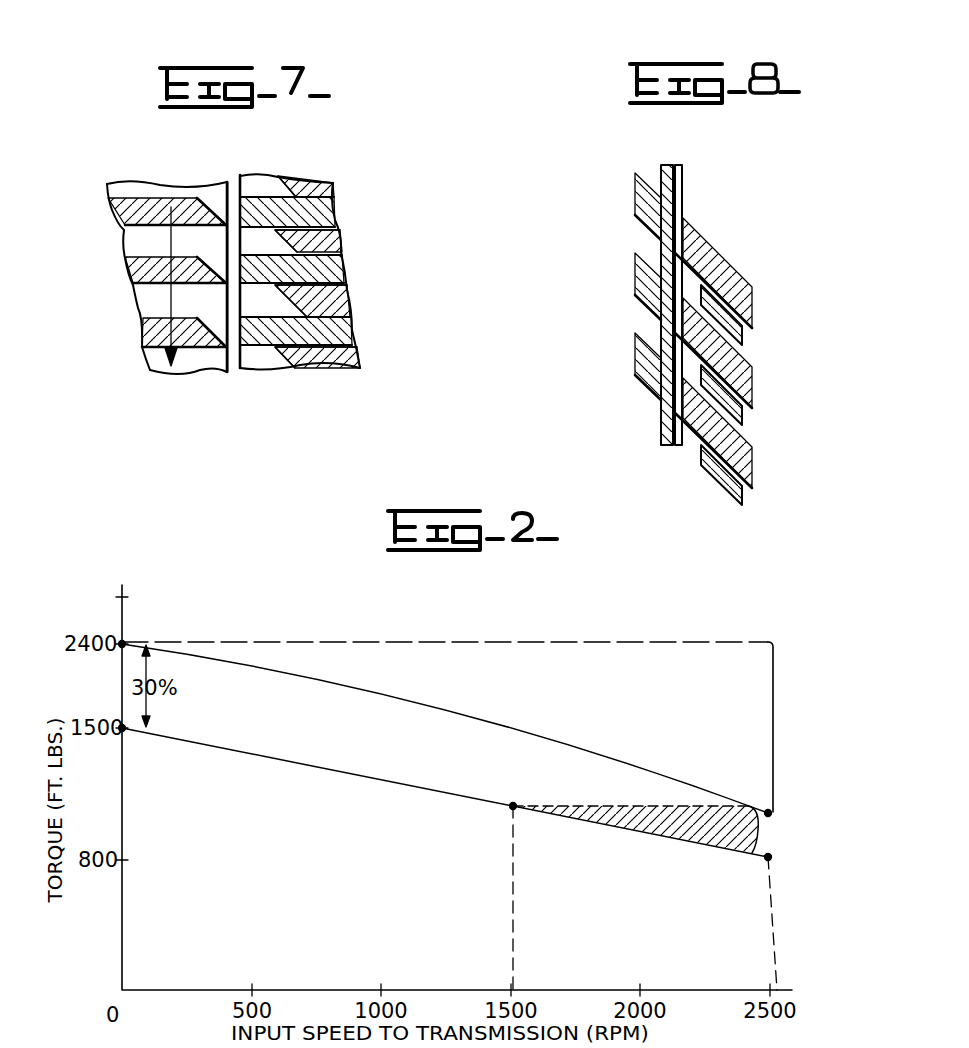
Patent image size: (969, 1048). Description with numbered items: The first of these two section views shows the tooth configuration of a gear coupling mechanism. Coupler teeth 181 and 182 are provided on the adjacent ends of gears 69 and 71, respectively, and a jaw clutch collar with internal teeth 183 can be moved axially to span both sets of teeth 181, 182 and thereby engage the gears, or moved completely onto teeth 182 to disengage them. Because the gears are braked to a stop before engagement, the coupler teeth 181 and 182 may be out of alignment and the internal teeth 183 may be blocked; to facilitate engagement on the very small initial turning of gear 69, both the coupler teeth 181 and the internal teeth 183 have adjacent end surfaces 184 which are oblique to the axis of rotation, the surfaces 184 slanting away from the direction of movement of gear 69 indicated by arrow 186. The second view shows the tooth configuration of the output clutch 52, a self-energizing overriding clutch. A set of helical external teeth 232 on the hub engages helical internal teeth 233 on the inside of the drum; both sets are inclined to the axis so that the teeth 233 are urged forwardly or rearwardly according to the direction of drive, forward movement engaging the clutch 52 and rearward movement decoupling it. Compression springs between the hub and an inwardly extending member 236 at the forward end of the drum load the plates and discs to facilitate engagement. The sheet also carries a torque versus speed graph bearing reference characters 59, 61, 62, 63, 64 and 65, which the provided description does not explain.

In FIG. 7, the gear 69 is at (108, 180).
In FIG. 7, the gear 71 is at (342, 210).
In FIG. 7, the coupler teeth 181 is at (152, 198).
In FIG. 7, the coupler teeth 182 is at (338, 265).
In FIG. 7, the internal teeth 183 is at (347, 298).
In FIG. 7, the end surfaces 184 is at (277, 242).
In FIG. 7, the arrow 186 is at (152, 239).
In FIG. 8, the output clutch 52 is at (630, 233).
In FIG. 8, the external teeth 232 is at (743, 332).
In FIG. 8, the internal teeth 233 is at (753, 303).
In FIG. 8, the inwardly extending member 236 is at (686, 175).
In FIG. 2, the maximum torque line 59 is at (668, 642).
In FIG. 2, the lower torque curve 61 is at (235, 748).
In FIG. 2, the torque drop at shift 62 is at (775, 722).
In FIG. 2, the upper torque curve 63 is at (460, 715).
In FIG. 2, the shift point 64 is at (515, 806).
In FIG. 2, the operating region 65 is at (640, 806).